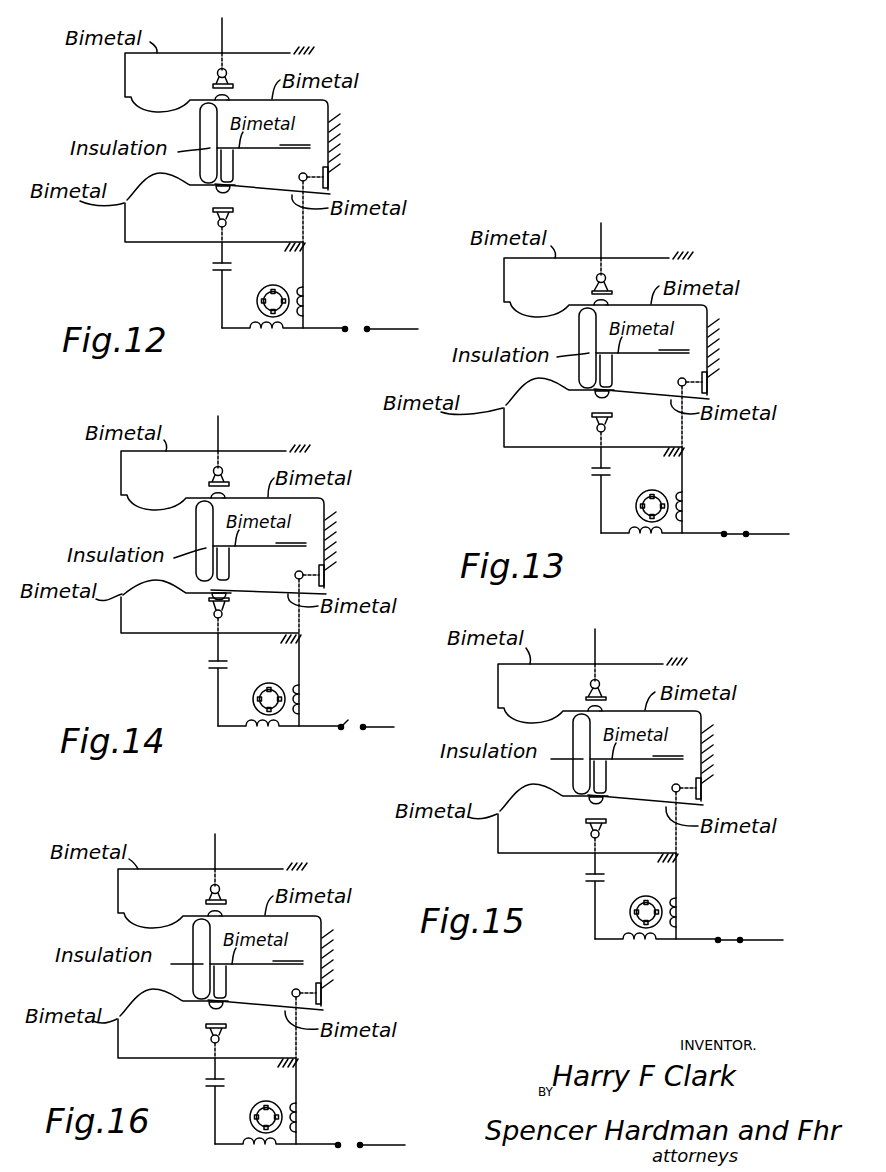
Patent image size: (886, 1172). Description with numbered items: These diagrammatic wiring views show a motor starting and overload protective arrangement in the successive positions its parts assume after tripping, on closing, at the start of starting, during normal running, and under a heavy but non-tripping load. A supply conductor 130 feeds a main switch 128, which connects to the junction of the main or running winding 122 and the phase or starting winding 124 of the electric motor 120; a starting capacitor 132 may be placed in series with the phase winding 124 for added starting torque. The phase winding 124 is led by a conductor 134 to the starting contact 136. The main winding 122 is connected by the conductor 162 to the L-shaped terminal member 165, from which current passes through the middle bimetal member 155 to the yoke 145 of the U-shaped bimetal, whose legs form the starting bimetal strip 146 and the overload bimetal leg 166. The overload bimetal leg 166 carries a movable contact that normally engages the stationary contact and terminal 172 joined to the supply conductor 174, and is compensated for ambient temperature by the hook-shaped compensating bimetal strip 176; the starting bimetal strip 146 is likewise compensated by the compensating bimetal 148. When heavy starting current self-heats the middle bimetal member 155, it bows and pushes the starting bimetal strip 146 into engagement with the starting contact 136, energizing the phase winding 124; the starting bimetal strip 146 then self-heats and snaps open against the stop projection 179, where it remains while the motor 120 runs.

In FIG. 12, the electric motor 120 is at (287, 272).
In FIG. 13, the electric motor 120 is at (604, 506).
In FIG. 14, the electric motor 120 is at (302, 680).
In FIG. 15, the electric motor 120 is at (620, 931).
In FIG. 16, the electric motor 120 is at (298, 1100).
In FIG. 12, the main or running winding 122 is at (306, 290).
In FIG. 13, the main or running winding 122 is at (709, 500).
In FIG. 14, the main or running winding 122 is at (325, 693).
In FIG. 15, the main or running winding 122 is at (703, 905).
In FIG. 16, the main or running winding 122 is at (317, 1113).
In FIG. 12, the phase or starting winding 124 is at (258, 330).
In FIG. 13, the phase or starting winding 124 is at (662, 545).
In FIG. 14, the phase or starting winding 124 is at (279, 738).
In FIG. 15, the phase or starting winding 124 is at (656, 951).
In FIG. 16, the phase or starting winding 124 is at (264, 1151).
In FIG. 12, the main switch 128 is at (346, 328).
In FIG. 13, the main switch 128 is at (750, 516).
In FIG. 14, the main switch 128 is at (352, 725).
In FIG. 15, the main switch 128 is at (744, 922).
In FIG. 16, the main switch 128 is at (368, 1126).
In FIG. 12, the supply conductor 130 is at (392, 330).
In FIG. 13, the supply conductor 130 is at (767, 550).
In FIG. 14, the supply conductor 130 is at (389, 742).
In FIG. 15, the supply conductor 130 is at (765, 956).
In FIG. 16, the supply conductor 130 is at (411, 1132).
In FIG. 12, the starting capacitor 132 is at (212, 271).
In FIG. 13, the starting capacitor 132 is at (568, 498).
In FIG. 14, the starting capacitor 132 is at (186, 693).
In FIG. 15, the starting capacitor 132 is at (569, 906).
In FIG. 16, the starting capacitor 132 is at (187, 1109).
In FIG. 12, the conductor 134 is at (222, 250).
In FIG. 13, the conductor 134 is at (570, 457).
In FIG. 14, the conductor 134 is at (176, 648).
In FIG. 15, the conductor 134 is at (568, 865).
In FIG. 16, the conductor 134 is at (184, 1068).
In FIG. 12, the starting contact 136 is at (212, 211).
In FIG. 13, the starting contact 136 is at (569, 429).
In FIG. 14, the starting contact 136 is at (189, 615).
In FIG. 15, the starting contact 136 is at (565, 836).
In FIG. 16, the starting contact 136 is at (188, 1041).
In FIG. 12, the yoke 145 is at (330, 108).
In FIG. 13, the yoke 145 is at (681, 350).
In FIG. 14, the yoke 145 is at (297, 543).
In FIG. 15, the yoke 145 is at (676, 756).
In FIG. 16, the yoke 145 is at (290, 960).
In FIG. 12, the starting bimetal strip 146 is at (250, 192).
In FIG. 13, the starting bimetal strip 146 is at (630, 413).
In FIG. 14, the starting bimetal strip 146 is at (242, 613).
In FIG. 15, the starting bimetal strip 146 is at (622, 818).
In FIG. 16, the starting bimetal strip 146 is at (241, 1023).
In FIG. 12, the compensating bimetal 148 is at (133, 244).
In FIG. 13, the compensating bimetal 148 is at (568, 421).
In FIG. 14, the compensating bimetal 148 is at (177, 606).
In FIG. 15, the compensating bimetal 148 is at (560, 825).
In FIG. 16, the compensating bimetal 148 is at (180, 1029).
In FIG. 12, the bimetal member 155 is at (283, 150).
In FIG. 13, the bimetal member 155 is at (651, 377).
In FIG. 14, the bimetal member 155 is at (268, 571).
In FIG. 15, the bimetal member 155 is at (645, 783).
In FIG. 16, the bimetal member 155 is at (265, 988).
In FIG. 12, the conductor 162 is at (305, 230).
In FIG. 13, the conductor 162 is at (708, 459).
In FIG. 14, the conductor 162 is at (326, 652).
In FIG. 15, the conductor 162 is at (700, 865).
In FIG. 16, the conductor 162 is at (317, 1070).
In FIG. 12, the L-shaped terminal member 165 is at (332, 177).
In FIG. 13, the L-shaped terminal member 165 is at (719, 382).
In FIG. 14, the L-shaped terminal member 165 is at (336, 575).
In FIG. 15, the L-shaped terminal member 165 is at (718, 788).
In FIG. 16, the L-shaped terminal member 165 is at (332, 992).
In FIG. 12, the overload bimetal leg 166 is at (250, 96).
In FIG. 13, the overload bimetal leg 166 is at (626, 282).
In FIG. 14, the overload bimetal leg 166 is at (242, 476).
In FIG. 15, the overload bimetal leg 166 is at (623, 690).
In FIG. 16, the overload bimetal leg 166 is at (240, 892).
In FIG. 12, the stationary contact and terminal 172 is at (212, 84).
In FIG. 13, the stationary contact and terminal 172 is at (576, 284).
In FIG. 14, the stationary contact and terminal 172 is at (192, 476).
In FIG. 15, the stationary contact and terminal 172 is at (568, 691).
In FIG. 16, the stationary contact and terminal 172 is at (188, 894).
In FIG. 12, the supply conductor 174 is at (225, 30).
In FIG. 13, the supply conductor 174 is at (630, 249).
In FIG. 14, the supply conductor 174 is at (246, 442).
In FIG. 15, the supply conductor 174 is at (626, 654).
In FIG. 16, the supply conductor 174 is at (242, 858).
In FIG. 12, the compensating bimetal strip 176 is at (124, 67).
In FIG. 13, the compensating bimetal strip 176 is at (570, 284).
In FIG. 14, the compensating bimetal strip 176 is at (180, 477).
In FIG. 15, the compensating bimetal strip 176 is at (566, 690).
In FIG. 16, the compensating bimetal strip 176 is at (176, 895).
In FIG. 12, the stop projection 179 is at (200, 130).
In FIG. 13, the stop projection 179 is at (557, 348).
In FIG. 14, the stop projection 179 is at (175, 541).
In FIG. 15, the stop projection 179 is at (555, 754).
In FIG. 16, the stop projection 179 is at (175, 959).